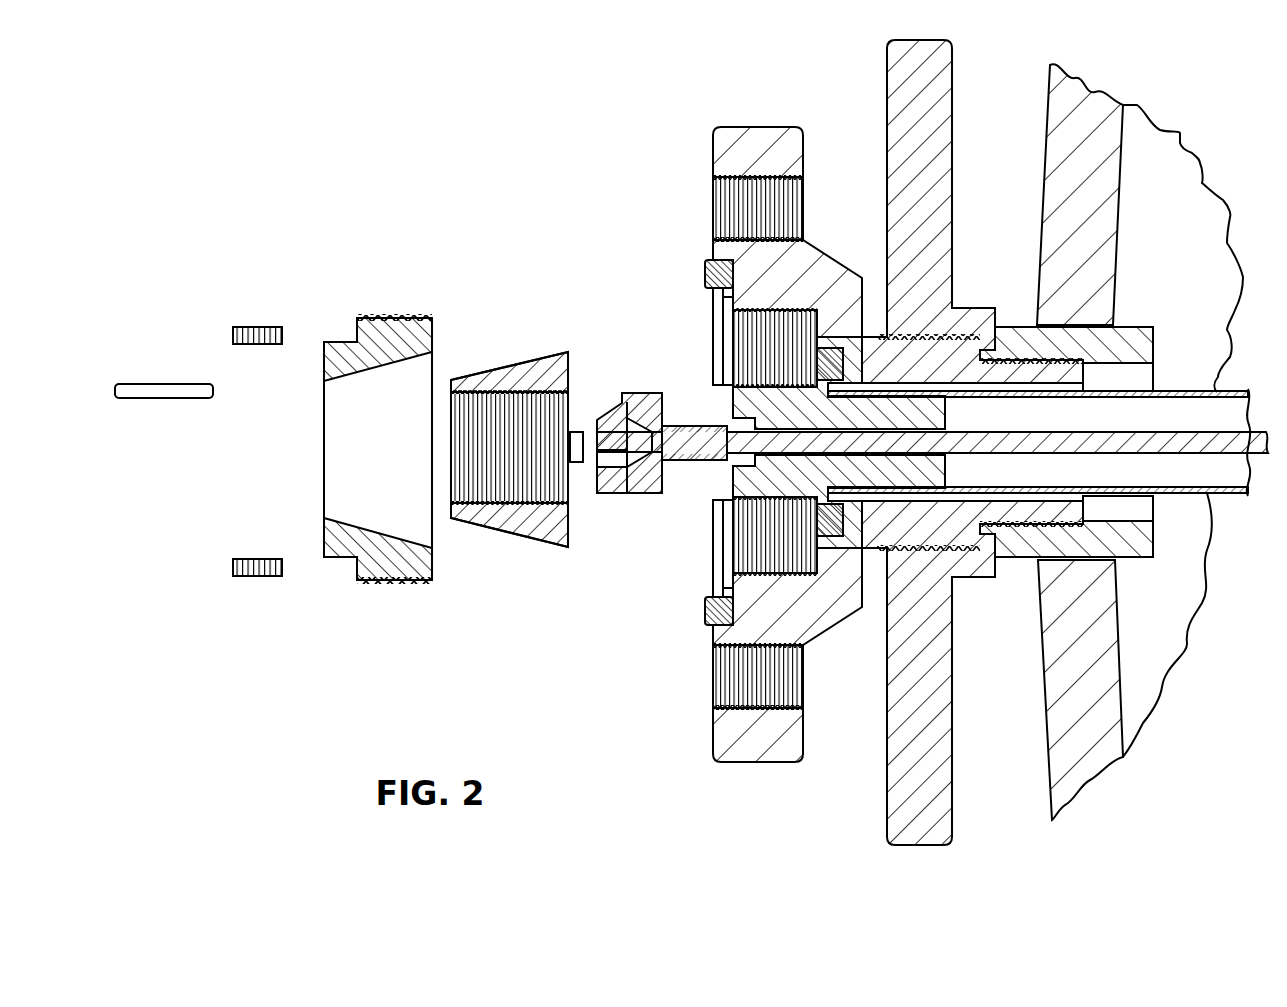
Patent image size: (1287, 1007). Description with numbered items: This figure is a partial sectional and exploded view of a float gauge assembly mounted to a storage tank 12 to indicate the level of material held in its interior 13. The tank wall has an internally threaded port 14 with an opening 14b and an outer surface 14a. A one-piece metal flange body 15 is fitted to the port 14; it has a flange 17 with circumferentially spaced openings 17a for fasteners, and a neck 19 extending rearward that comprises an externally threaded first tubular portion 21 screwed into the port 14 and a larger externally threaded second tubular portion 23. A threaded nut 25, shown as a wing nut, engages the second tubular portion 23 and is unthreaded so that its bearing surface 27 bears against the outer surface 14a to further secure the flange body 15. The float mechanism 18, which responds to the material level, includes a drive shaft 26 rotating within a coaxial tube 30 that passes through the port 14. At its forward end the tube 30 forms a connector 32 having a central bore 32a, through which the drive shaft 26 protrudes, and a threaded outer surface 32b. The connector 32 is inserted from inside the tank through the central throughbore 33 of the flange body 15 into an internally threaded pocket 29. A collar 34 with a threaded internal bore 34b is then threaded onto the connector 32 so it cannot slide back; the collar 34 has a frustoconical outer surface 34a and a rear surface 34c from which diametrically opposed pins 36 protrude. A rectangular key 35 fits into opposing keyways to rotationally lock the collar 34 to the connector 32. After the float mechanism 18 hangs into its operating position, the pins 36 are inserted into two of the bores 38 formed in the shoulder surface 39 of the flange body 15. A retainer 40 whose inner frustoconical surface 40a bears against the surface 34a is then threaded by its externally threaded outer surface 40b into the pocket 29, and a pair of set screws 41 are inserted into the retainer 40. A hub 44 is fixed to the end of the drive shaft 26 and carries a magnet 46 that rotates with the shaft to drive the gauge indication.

The storage tank 12 is at (1088, 108).
The interior 13 is at (1175, 190).
The port 14 is at (1012, 325).
The outer surface 14a is at (1000, 575).
The opening 14b is at (1140, 512).
The flange body 15 is at (805, 127).
The flange 17 is at (737, 140).
The openings 17a is at (760, 185).
The float mechanism 18 is at (1242, 389).
The neck 19 is at (870, 337).
The first tubular portion 21 is at (1075, 366).
The second tubular portion 23 is at (955, 335).
The threaded nut 25 is at (950, 90).
The drive shaft 26 is at (1247, 496).
The bearing surface 27 is at (993, 576).
The threaded pocket 29 is at (745, 567).
The tube 30 is at (1170, 392).
The connector 32 is at (990, 545).
The central bore 32a is at (743, 447).
The threaded outer surface 32b is at (755, 503).
The central throughbore 33 is at (1065, 491).
The collar 34 is at (487, 372).
The frustoconical outer surface 34a is at (527, 357).
The threaded internal bore 34b is at (508, 500).
The rear surface 34c is at (568, 530).
The key 35 is at (148, 388).
The pins 36 is at (580, 463).
The bores 38 is at (822, 360).
The shoulder surface 39 is at (805, 598).
The retainer 40 is at (358, 580).
The inner frustoconical surface 40a is at (425, 565).
The externally threaded outer surface 40b is at (395, 560).
The set screws 41 is at (250, 326).
The hub 44 is at (677, 428).
The magnet 46 is at (640, 400).